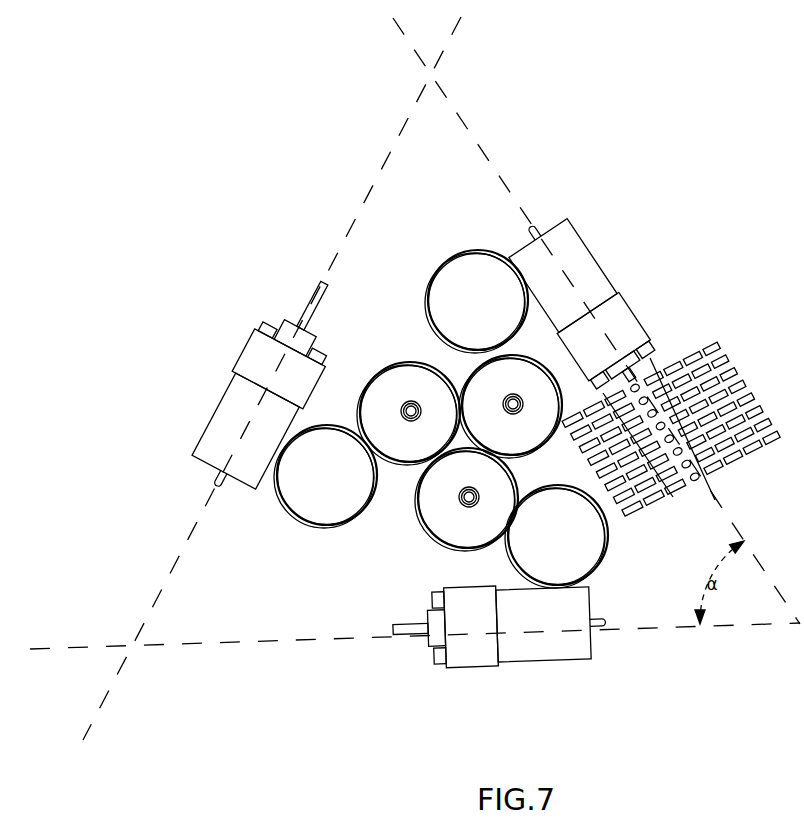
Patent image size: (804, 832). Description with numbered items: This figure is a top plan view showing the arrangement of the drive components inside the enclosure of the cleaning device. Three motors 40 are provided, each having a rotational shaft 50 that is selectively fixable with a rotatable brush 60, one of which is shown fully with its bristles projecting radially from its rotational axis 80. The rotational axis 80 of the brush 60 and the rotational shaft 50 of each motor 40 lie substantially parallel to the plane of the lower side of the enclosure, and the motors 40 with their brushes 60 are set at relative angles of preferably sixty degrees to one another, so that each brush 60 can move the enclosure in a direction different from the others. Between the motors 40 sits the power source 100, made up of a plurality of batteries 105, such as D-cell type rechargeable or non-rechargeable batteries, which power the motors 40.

The motor 40 is at (242, 357).
The rotational shaft 50 is at (308, 305).
The rotatable brush 60 is at (708, 344).
The rotational axis 80 is at (733, 518).
The power source 100 is at (418, 322).
The battery 105 is at (468, 255).